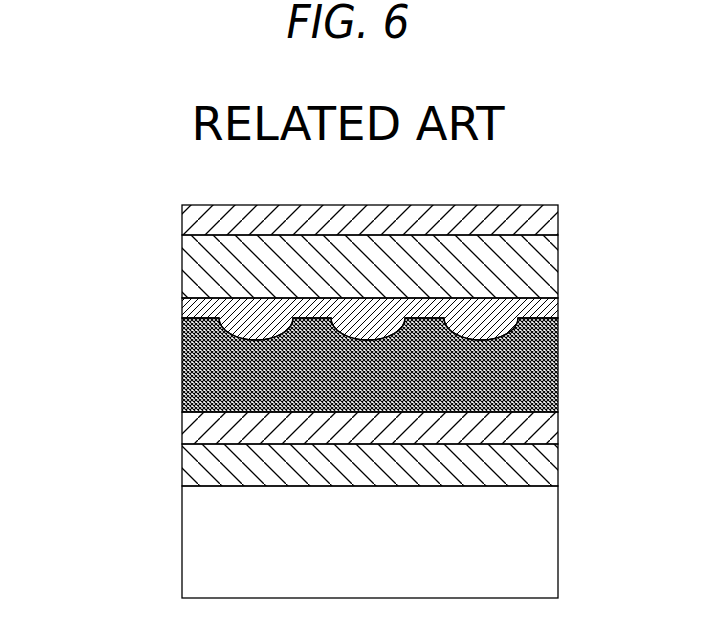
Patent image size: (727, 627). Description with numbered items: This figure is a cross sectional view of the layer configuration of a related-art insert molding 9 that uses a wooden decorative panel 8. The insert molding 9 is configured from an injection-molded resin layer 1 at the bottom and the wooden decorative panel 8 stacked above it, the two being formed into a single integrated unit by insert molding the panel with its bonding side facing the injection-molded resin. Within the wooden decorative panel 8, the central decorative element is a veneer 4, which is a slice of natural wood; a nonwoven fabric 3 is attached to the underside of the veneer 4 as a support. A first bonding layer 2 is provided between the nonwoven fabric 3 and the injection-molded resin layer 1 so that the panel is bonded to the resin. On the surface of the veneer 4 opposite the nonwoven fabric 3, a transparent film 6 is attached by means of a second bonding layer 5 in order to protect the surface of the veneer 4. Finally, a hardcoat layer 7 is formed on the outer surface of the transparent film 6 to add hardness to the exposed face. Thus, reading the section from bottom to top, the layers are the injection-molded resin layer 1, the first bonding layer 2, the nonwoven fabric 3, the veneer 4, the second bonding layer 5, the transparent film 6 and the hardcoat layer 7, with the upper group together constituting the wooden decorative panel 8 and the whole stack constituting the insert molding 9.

The injection-molded resin layer 1 is at (547, 535).
The first bonding layer 2 is at (558, 457).
The nonwoven fabric 3 is at (558, 428).
The veneer 4 is at (558, 363).
The second bonding layer 5 is at (558, 300).
The transparent film 6 is at (558, 257).
The hardcoat layer 7 is at (558, 206).
The wooden decorative panel 8 is at (167, 204).
The insert molding 9 is at (92, 203).